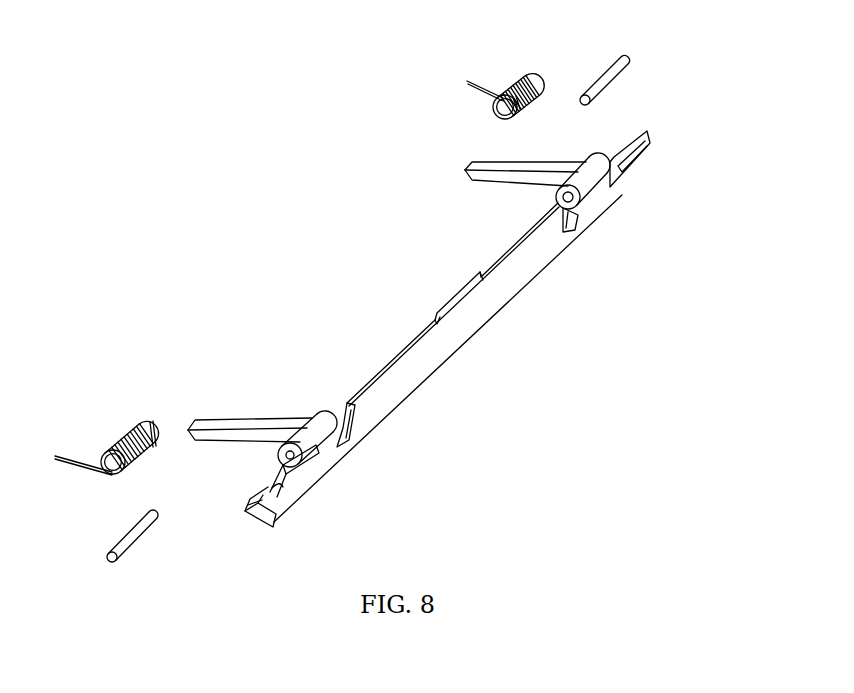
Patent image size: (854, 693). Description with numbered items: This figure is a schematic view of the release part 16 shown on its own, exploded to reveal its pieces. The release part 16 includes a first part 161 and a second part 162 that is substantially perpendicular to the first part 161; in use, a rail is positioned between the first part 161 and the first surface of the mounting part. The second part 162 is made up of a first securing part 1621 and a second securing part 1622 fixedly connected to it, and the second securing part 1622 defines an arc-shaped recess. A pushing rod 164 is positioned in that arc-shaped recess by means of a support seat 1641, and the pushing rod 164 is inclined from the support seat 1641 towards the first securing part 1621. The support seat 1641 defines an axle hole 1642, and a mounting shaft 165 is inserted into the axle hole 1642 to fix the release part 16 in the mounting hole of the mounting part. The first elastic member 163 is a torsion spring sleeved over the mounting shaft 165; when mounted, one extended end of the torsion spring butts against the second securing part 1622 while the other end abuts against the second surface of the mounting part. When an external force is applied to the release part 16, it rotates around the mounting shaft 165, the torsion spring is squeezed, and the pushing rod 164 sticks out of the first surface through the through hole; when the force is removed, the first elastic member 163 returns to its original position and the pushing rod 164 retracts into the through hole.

The release part 16 is at (372, 237).
The first part 161 is at (263, 505).
The second part 162 is at (317, 476).
The first securing part 1621 is at (275, 507).
The second securing part 1622 is at (293, 483).
The first elastic member 163 is at (505, 87).
The pushing rod 164 is at (468, 170).
The support seat 1641 is at (587, 183).
The axle hole 1642 is at (572, 207).
The mounting shaft 165 is at (610, 72).